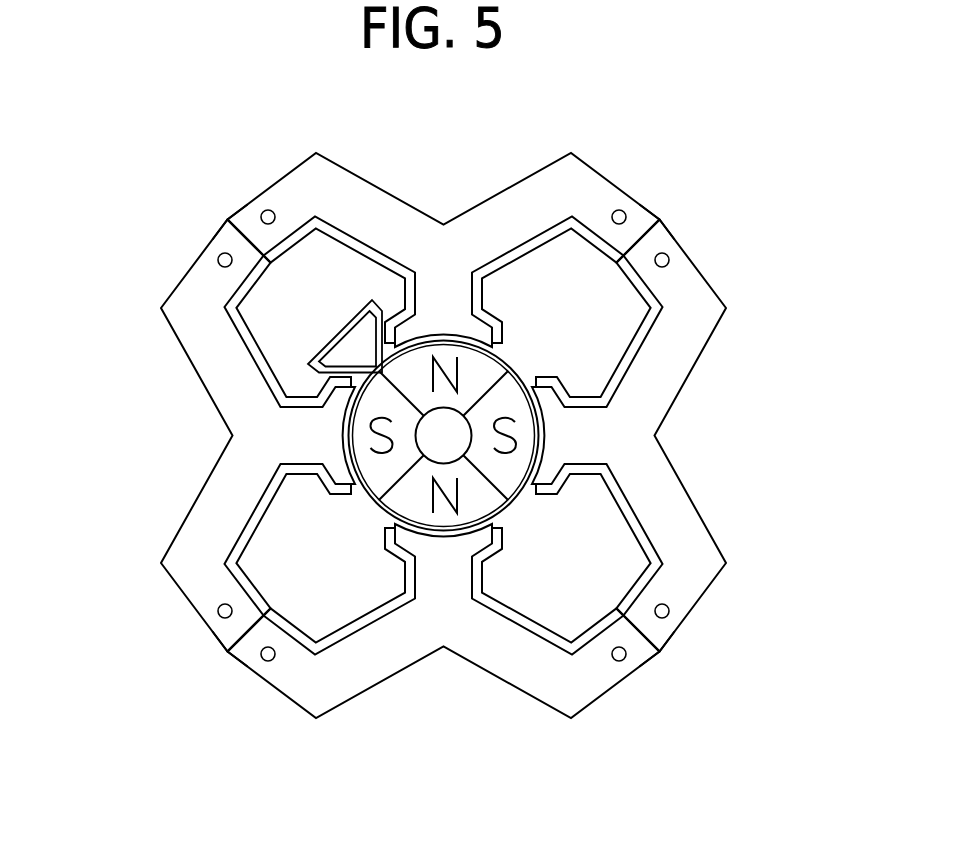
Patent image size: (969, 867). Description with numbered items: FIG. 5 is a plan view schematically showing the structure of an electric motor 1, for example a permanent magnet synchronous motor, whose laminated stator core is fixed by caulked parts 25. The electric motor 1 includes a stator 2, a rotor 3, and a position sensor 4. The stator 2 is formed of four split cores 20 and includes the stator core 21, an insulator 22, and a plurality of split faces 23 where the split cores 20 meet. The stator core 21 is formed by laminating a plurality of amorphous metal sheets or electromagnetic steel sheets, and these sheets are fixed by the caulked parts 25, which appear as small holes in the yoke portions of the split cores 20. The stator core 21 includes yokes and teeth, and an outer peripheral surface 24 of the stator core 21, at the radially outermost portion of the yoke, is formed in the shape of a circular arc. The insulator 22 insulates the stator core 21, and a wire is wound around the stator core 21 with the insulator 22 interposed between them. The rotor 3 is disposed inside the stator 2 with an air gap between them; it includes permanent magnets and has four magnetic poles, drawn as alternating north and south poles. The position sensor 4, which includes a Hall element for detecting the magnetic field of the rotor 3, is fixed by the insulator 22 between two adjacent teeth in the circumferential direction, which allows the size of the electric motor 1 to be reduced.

The electric motor 1 is at (443, 436).
The stator 2 is at (443, 436).
The rotor 3 is at (445, 421).
The position sensor 4 is at (345, 336).
The split core 20 is at (443, 436).
The stator core 21 is at (441, 435).
The insulator 22 is at (441, 435).
The split face 23 is at (443, 432).
The outer peripheral surface 24 is at (443, 437).
The caulked part 25 is at (443, 434).